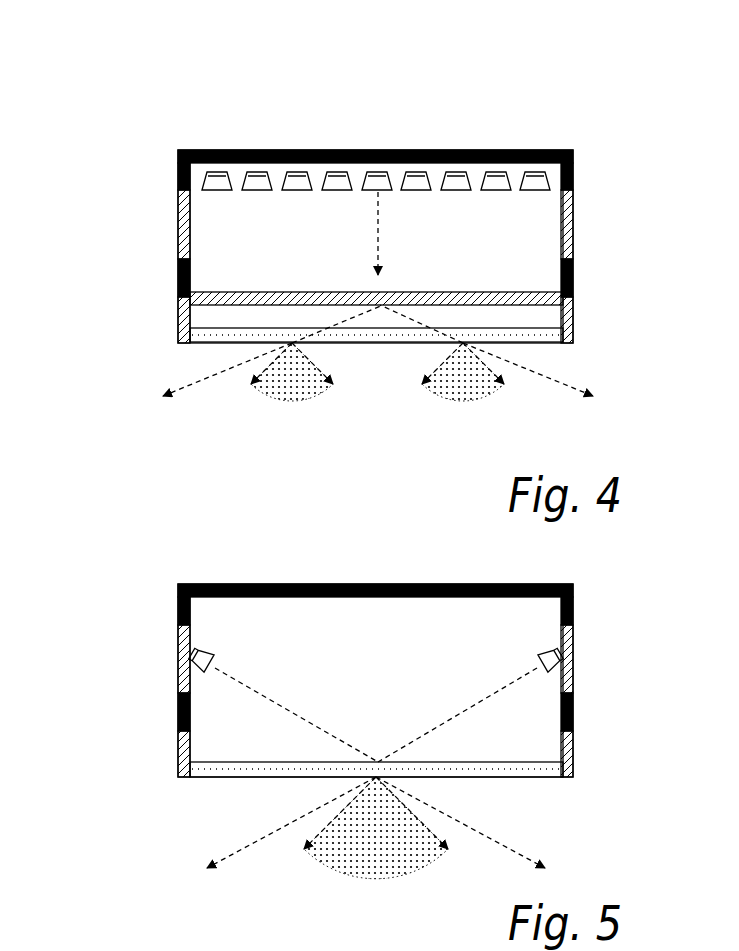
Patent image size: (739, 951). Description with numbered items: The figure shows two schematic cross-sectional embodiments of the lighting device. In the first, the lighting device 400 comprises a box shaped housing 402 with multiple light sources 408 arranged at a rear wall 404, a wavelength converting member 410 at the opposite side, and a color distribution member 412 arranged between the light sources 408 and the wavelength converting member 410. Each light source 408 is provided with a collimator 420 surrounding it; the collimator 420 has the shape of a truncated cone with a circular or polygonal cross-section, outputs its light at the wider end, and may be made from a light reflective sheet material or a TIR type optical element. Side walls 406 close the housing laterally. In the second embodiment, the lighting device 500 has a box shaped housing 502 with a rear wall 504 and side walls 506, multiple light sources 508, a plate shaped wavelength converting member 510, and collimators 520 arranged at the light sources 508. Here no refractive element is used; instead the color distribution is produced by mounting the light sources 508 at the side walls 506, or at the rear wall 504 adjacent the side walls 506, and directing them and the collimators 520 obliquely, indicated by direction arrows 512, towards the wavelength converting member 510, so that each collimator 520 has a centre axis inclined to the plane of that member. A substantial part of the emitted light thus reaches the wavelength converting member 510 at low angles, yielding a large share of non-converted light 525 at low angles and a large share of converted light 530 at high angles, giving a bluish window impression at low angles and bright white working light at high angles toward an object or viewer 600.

In FIG. 4, the lighting device 400 is at (282, 97).
In FIG. 4, the box shaped housing 402 is at (208, 145).
In FIG. 4, the rear wall 404 is at (363, 150).
In FIG. 4, the side wall 406 is at (180, 228).
In FIG. 4, the light sources 408 is at (290, 192).
In FIG. 4, the wavelength converting member 410 is at (547, 337).
In FIG. 4, the color distribution member 412 is at (496, 300).
In FIG. 4, the collimators 420 is at (283, 190).
In FIG. 5, the lighting device 500 is at (253, 530).
In FIG. 5, the box shaped housing 502 is at (358, 584).
In FIG. 5, the rear wall 504 is at (398, 583).
In FIG. 5, the side walls 506 is at (178, 654).
In FIG. 5, the light sources 508 is at (215, 660).
In FIG. 5, the wavelength converting member 510 is at (265, 762).
In FIG. 5, the light direction 512 is at (220, 641).
In FIG. 5, the collimators 520 is at (204, 674).
In FIG. 5, the non-converted light 525 is at (236, 852).
In FIG. 5, the converted light 530 is at (335, 858).
In FIG. 5, the object 600 is at (386, 950).